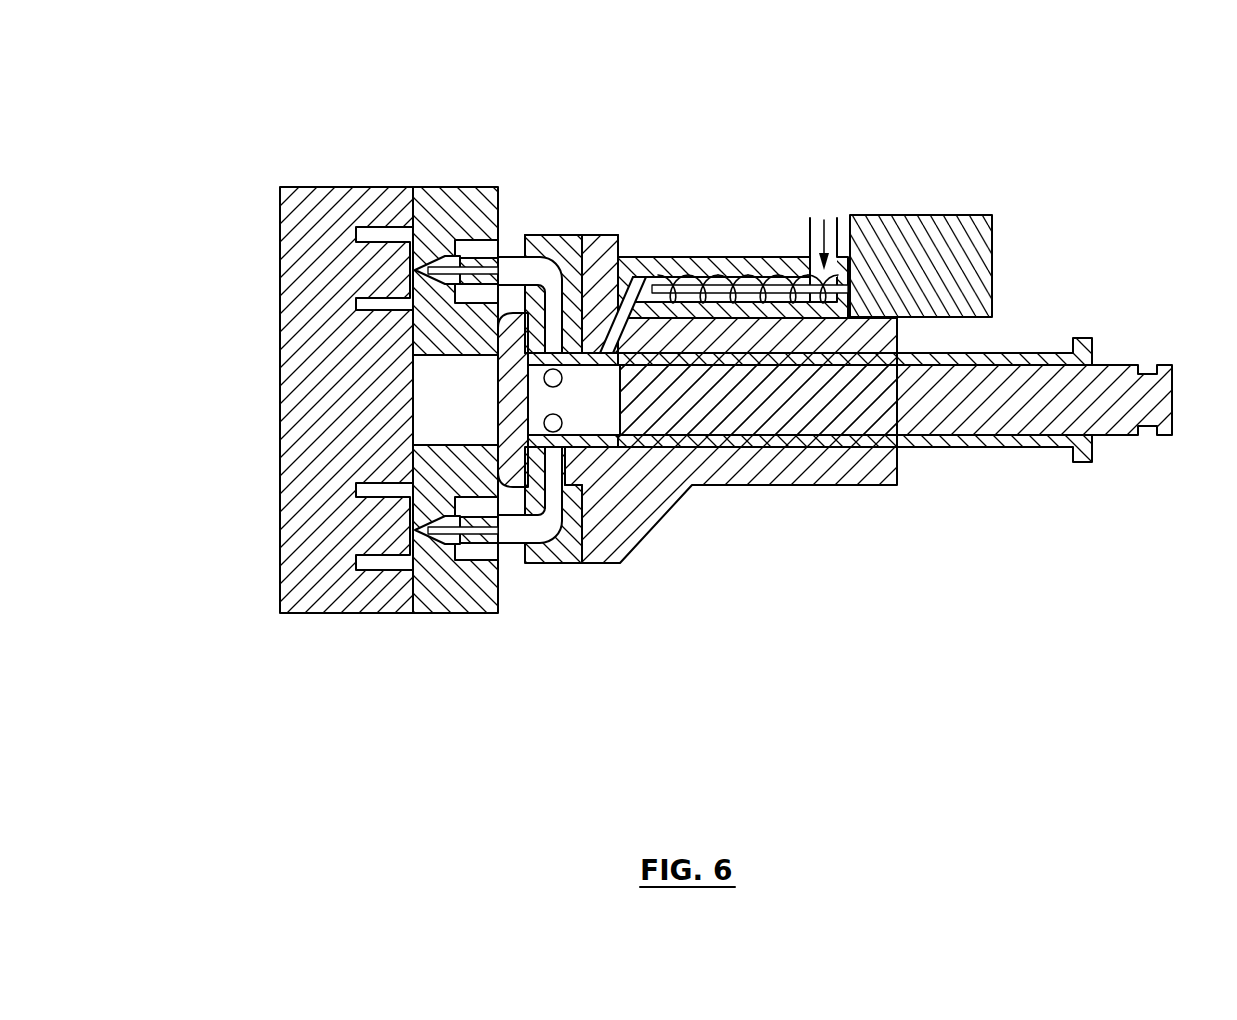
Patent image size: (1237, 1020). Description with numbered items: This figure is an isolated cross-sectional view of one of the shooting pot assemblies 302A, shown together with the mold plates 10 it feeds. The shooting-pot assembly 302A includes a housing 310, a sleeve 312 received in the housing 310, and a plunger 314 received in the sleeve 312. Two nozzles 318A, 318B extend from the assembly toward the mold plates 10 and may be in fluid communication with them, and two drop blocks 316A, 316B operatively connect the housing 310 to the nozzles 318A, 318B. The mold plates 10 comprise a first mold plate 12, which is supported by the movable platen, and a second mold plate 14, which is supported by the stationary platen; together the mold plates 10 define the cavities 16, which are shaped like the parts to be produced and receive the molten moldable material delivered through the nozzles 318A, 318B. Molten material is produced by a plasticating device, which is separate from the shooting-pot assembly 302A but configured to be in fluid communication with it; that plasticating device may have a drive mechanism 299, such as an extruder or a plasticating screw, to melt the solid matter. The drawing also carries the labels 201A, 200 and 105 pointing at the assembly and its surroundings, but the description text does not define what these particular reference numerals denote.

The mold plates 10 is at (342, 333).
The first mold plate 12 is at (300, 355).
The second mold plate 14 is at (447, 202).
The cavities 16 is at (368, 562).
The injection system 105 is at (793, 477).
The injection unit 200 is at (793, 468).
The injector assembly 201A is at (793, 442).
The drive mechanism 299 is at (788, 290).
The shooting pot assembly 302A is at (793, 420).
The housing 310 is at (712, 468).
The sleeve 312 is at (627, 437).
The plunger 314 is at (768, 418).
The drop block 316A is at (558, 243).
The drop block 316B is at (560, 558).
The nozzle 318A is at (467, 253).
The nozzle 318B is at (504, 555).